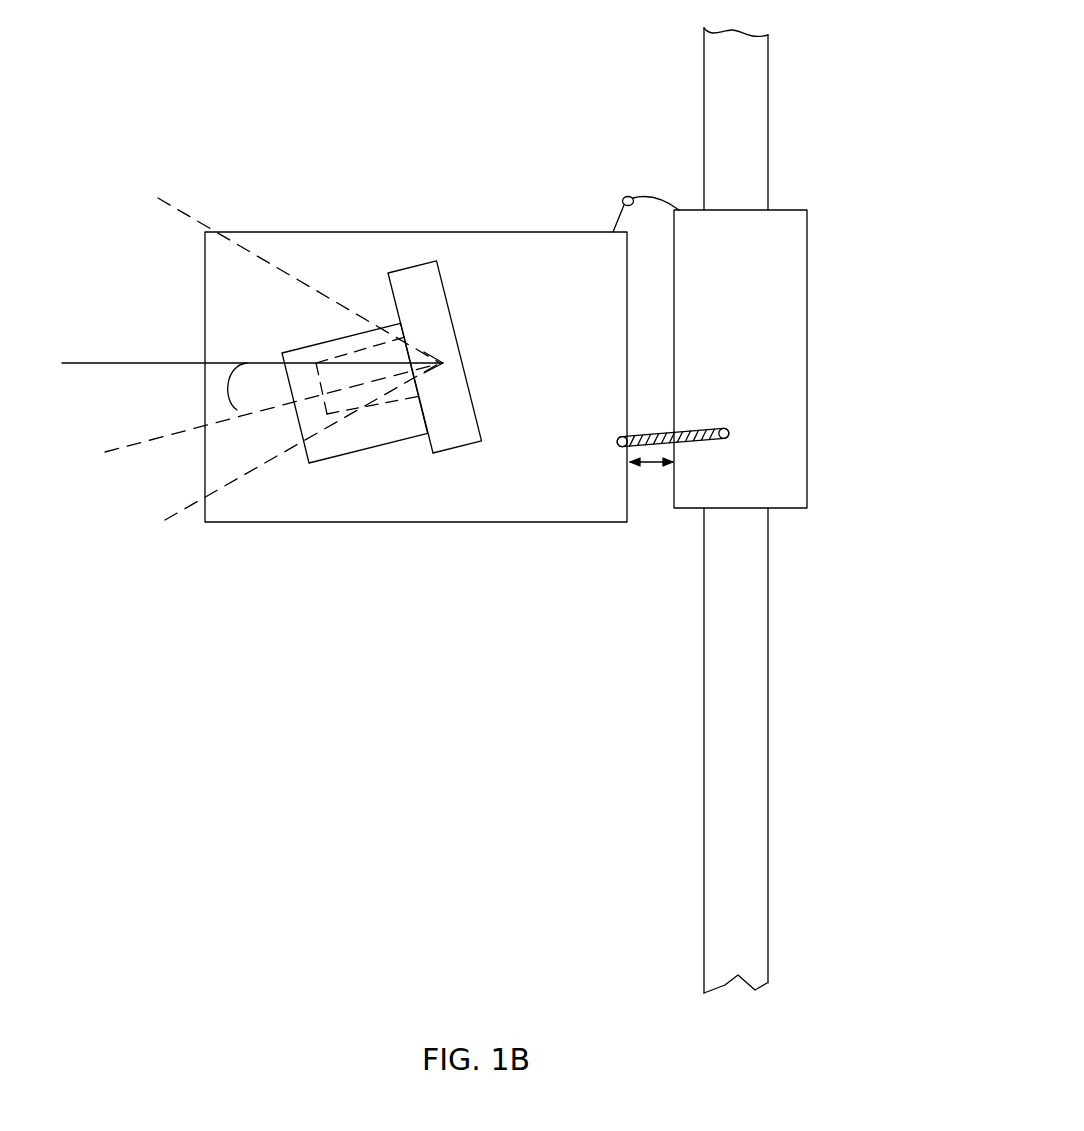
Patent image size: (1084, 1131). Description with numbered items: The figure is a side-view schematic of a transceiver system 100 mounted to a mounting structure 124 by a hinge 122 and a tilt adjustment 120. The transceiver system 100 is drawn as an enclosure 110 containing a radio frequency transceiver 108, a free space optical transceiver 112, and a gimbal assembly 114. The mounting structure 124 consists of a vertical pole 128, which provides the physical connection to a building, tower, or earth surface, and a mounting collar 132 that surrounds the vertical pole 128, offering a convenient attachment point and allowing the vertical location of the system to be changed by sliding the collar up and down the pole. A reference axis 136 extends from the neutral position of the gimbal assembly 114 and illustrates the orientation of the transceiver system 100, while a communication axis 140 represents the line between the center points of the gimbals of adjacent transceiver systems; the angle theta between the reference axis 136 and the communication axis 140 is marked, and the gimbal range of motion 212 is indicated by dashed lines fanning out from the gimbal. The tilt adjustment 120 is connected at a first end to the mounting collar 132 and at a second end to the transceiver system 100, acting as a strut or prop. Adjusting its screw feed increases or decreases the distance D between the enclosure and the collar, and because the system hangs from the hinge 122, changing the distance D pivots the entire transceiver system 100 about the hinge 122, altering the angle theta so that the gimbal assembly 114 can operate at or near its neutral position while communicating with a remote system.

The transceiver system 100 is at (406, 549).
The radio frequency transceiver 108 is at (411, 387).
The enclosure 110 is at (468, 521).
The free space optical transceiver 112 is at (390, 444).
The gimbal assembly 114 is at (438, 313).
The tilt adjustment 120 is at (697, 440).
The hinge 122 is at (625, 196).
The mounting structure 124 is at (822, 130).
The vertical pole 128 is at (768, 182).
The mounting collar 132 is at (807, 250).
The reference axis 136 is at (122, 365).
The communication axis 140 is at (153, 440).
The gimbal range of motion 212 is at (180, 210).
The distance D is at (651, 478).